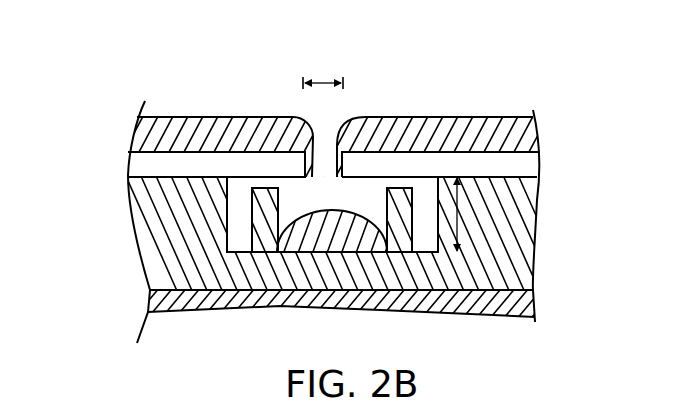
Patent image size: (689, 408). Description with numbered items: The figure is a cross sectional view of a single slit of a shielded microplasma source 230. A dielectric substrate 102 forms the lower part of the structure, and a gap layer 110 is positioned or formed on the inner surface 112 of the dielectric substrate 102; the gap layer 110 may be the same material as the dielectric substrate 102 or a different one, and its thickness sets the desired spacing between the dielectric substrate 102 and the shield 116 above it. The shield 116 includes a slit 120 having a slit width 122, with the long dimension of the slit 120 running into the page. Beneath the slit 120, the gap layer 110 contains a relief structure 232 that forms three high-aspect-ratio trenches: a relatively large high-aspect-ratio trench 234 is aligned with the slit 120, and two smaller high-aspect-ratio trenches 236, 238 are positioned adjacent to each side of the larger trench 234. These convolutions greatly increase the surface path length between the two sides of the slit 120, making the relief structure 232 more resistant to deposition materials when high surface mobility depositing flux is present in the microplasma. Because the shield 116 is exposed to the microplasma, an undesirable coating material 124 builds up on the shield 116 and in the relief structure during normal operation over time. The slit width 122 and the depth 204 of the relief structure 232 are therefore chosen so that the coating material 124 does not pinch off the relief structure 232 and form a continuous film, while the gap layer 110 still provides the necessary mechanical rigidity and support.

The dielectric substrate 102 is at (472, 293).
The gap layer 110 is at (508, 246).
The inner surface 112 is at (519, 294).
The shield 116 is at (508, 166).
The slit 120 is at (325, 120).
The slit width 122 is at (325, 81).
The coating material 124 is at (458, 122).
The depth 204 is at (461, 216).
The shielded microplasma source 230 is at (574, 97).
The relief structure 232 is at (347, 202).
The large high-aspect-ratio trench 234 is at (300, 253).
The smaller high-aspect-ratio trench 236 is at (238, 252).
The smaller high-aspect-ratio trench 238 is at (420, 253).